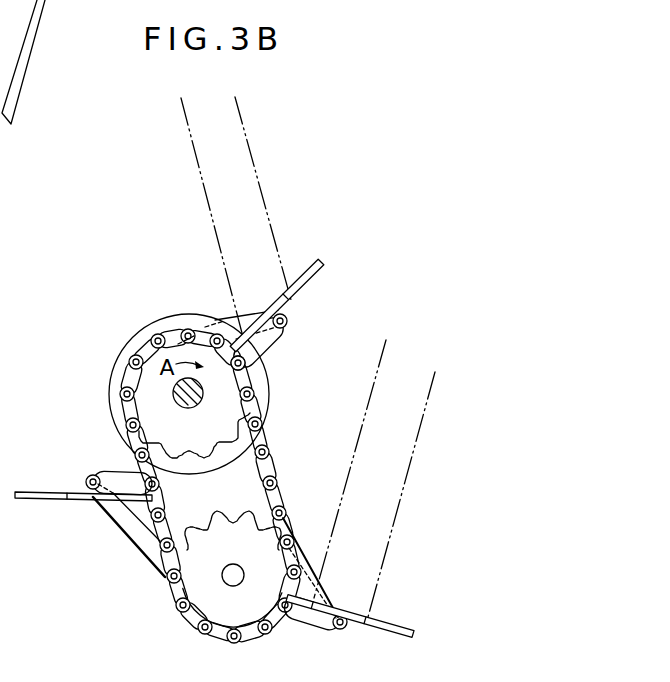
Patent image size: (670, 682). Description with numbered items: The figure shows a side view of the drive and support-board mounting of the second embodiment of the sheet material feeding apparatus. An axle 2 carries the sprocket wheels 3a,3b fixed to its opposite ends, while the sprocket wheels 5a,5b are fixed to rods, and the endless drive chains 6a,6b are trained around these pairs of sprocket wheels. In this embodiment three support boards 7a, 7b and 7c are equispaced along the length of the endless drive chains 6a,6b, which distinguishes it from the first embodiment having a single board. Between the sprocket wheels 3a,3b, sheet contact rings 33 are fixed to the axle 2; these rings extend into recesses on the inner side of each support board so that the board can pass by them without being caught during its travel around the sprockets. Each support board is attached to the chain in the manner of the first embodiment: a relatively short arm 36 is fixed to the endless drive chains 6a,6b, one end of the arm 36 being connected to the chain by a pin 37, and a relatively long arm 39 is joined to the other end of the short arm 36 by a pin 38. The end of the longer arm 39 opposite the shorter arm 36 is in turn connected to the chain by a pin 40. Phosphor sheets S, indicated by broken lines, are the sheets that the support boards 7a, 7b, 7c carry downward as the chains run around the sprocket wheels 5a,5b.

The axle 2 is at (185, 410).
The sprocket wheels 3a,3b is at (225, 465).
The sprocket wheels 5a,5b is at (126, 532).
The endless drive chains 6a,6b is at (267, 446).
The support board 7a is at (305, 267).
The support board 7b is at (407, 631).
The support board 7c is at (41, 495).
The sheet contact rings 33 is at (124, 344).
The relatively short arm 36 is at (281, 351).
The pin 37 is at (266, 364).
The pin 38 is at (288, 317).
The relatively long arm 39 is at (250, 312).
The pin 40 is at (158, 340).
The phosphor sheets S is at (269, 212).